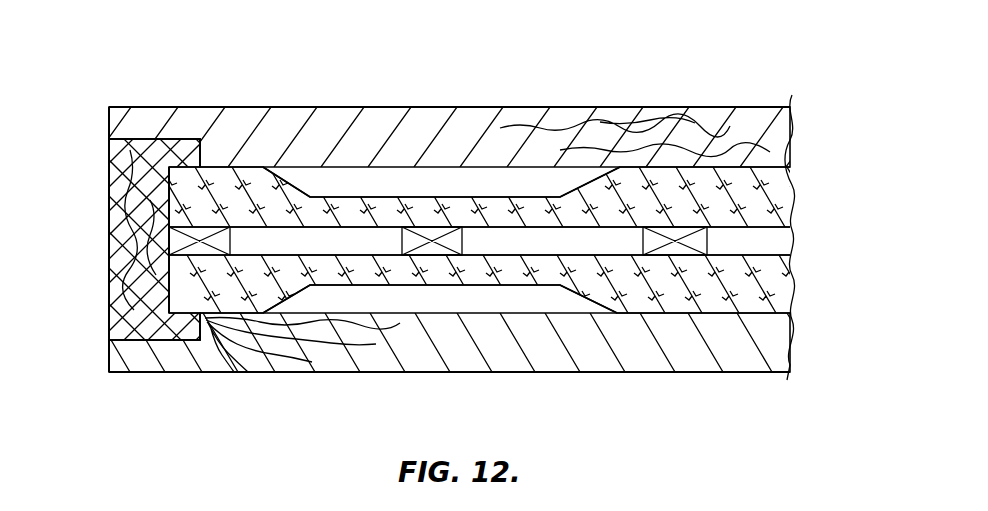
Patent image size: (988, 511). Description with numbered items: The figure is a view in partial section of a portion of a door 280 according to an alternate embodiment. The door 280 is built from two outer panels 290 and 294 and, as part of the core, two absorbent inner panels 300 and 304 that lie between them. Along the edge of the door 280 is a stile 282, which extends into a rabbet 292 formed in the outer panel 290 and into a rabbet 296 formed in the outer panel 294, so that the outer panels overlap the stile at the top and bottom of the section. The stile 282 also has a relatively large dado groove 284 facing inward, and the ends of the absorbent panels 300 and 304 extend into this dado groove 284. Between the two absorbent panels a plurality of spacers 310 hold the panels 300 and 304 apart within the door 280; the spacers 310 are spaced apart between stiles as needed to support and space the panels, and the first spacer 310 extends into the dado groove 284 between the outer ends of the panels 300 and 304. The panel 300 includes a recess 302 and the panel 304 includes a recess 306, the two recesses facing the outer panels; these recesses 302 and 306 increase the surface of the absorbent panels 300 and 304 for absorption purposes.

The door 280 is at (384, 82).
The stile 282 is at (108, 268).
The dado groove 284 is at (170, 180).
The outer panel 290 is at (258, 107).
The rabbet 292 is at (152, 150).
The outer panel 294 is at (230, 372).
The rabbet 296 is at (182, 334).
The absorbent inner panel 300 is at (786, 183).
The recess 302 is at (573, 195).
The absorbent inner panel 304 is at (786, 300).
The recess 306 is at (490, 285).
The spacers 310 is at (402, 239).